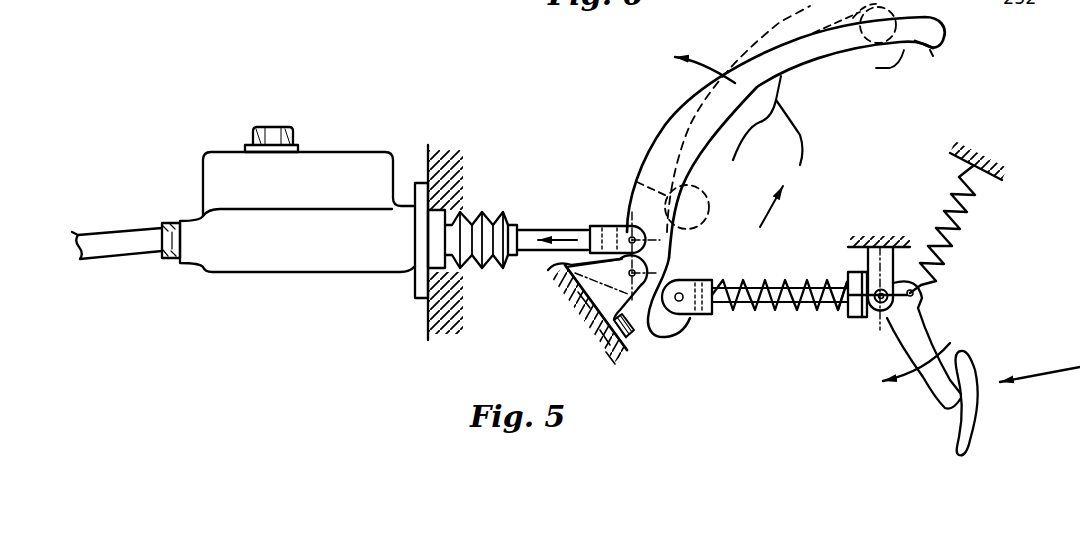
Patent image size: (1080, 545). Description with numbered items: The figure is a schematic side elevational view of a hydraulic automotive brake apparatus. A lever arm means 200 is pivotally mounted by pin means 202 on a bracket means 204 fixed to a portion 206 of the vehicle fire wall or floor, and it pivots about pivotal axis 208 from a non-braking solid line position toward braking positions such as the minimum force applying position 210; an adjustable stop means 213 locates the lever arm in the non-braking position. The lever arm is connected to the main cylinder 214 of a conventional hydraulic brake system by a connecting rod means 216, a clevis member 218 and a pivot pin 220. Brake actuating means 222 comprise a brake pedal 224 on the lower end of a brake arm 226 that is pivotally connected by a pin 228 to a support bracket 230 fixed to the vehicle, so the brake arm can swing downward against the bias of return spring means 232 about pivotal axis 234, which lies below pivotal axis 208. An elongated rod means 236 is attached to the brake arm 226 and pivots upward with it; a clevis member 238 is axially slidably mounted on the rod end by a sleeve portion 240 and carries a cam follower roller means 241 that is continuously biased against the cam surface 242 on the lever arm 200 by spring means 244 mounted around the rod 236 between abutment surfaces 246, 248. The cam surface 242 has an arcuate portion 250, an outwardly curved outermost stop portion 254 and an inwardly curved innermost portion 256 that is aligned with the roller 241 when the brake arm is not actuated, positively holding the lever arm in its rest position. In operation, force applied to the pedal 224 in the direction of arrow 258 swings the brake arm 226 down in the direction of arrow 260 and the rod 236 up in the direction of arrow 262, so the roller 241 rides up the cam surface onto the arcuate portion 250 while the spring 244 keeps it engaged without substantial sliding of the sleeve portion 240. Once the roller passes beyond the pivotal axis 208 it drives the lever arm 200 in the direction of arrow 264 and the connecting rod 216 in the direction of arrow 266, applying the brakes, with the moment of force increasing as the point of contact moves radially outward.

The lever arm means 200 is at (702, 108).
The pin means 202 is at (562, 264).
The bracket means 204 is at (580, 318).
The portion of vehicle fire wall or floor 206 is at (605, 340).
The pivotal axis 208 is at (578, 299).
The minimum force applying position 210 is at (637, 181).
The adjustable stop means 213 is at (630, 329).
The main cylinder 214 is at (316, 263).
The connecting rod means 216 is at (530, 230).
The clevis member 218 is at (604, 226).
The pivot pin 220 is at (658, 250).
The brake actuating means 222 is at (885, 342).
The brake pedal 224 is at (972, 433).
The brake arm 226 is at (935, 337).
The pin 228 is at (885, 332).
The support bracket 230 is at (880, 258).
The return spring means 232 is at (955, 230).
The pivotal axis 234 is at (897, 312).
The elongated rod means 236 is at (785, 310).
The clevis member 238 is at (698, 313).
The sleeve portion 240 is at (735, 312).
The cam follower roller means 241 is at (921, 57).
The cam surface 242 is at (786, 86).
The spring means 244 is at (790, 282).
The abutment surface 246 is at (710, 314).
The abutment surface 248 is at (842, 316).
The arcuate portion 250 is at (797, 137).
The outwardly curved outermost stop portion 254 is at (945, 30).
The inwardly curved innermost portion 256 is at (645, 332).
The arrow 258 is at (1027, 372).
The arrow 260 is at (910, 380).
The arrow 262 is at (768, 212).
The arrow 264 is at (712, 34).
The arrow 266 is at (548, 233).